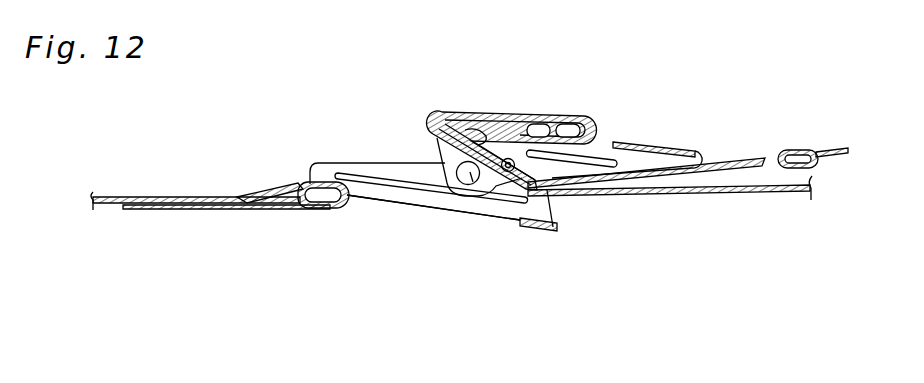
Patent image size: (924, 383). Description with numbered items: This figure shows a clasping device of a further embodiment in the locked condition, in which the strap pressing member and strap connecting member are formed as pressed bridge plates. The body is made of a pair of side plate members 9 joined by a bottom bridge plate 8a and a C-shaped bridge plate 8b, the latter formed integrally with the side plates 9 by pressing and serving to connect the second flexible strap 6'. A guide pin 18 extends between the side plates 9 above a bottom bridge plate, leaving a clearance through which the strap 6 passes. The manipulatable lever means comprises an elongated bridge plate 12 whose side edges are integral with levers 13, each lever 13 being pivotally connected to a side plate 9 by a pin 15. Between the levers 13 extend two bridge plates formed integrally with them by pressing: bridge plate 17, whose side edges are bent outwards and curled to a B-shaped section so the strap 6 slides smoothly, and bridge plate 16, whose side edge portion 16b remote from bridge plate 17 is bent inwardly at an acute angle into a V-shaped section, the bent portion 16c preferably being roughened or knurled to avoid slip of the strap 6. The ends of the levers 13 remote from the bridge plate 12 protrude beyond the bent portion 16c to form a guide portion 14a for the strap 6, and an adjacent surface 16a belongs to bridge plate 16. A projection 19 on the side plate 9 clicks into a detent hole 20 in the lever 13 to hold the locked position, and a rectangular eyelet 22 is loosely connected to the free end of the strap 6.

The strap 6 is at (451, 249).
The second flexible strap 6' is at (226, 263).
The bottom bridge plate 8a is at (550, 230).
The C-shaped bridge plate 8b is at (320, 210).
The side plate member 9 is at (374, 193).
The elongated bridge plate 12 is at (690, 150).
The lever 13 is at (640, 155).
The guide portion 14a is at (433, 137).
The pin 15 is at (471, 180).
The bridge plate (strap pressing member) 16 is at (510, 120).
The bracket arm portion 16a is at (468, 115).
The side edge portion 16b is at (443, 188).
The bent portion 16c is at (443, 113).
The bridge plate (strap connecting member) 17 is at (570, 118).
The guide pin 18 is at (598, 140).
The projection 19 is at (505, 172).
The detent hole 20 is at (522, 228).
The eyelet 22 is at (840, 147).